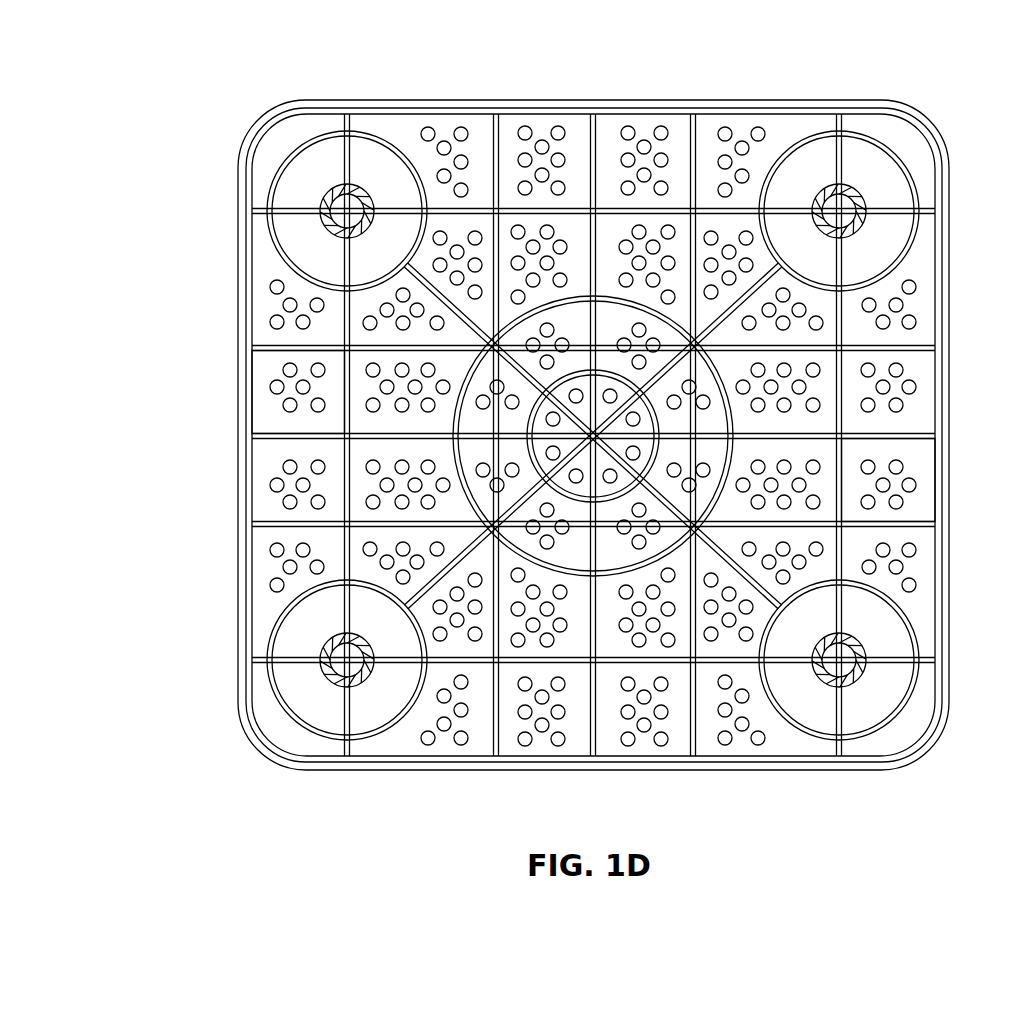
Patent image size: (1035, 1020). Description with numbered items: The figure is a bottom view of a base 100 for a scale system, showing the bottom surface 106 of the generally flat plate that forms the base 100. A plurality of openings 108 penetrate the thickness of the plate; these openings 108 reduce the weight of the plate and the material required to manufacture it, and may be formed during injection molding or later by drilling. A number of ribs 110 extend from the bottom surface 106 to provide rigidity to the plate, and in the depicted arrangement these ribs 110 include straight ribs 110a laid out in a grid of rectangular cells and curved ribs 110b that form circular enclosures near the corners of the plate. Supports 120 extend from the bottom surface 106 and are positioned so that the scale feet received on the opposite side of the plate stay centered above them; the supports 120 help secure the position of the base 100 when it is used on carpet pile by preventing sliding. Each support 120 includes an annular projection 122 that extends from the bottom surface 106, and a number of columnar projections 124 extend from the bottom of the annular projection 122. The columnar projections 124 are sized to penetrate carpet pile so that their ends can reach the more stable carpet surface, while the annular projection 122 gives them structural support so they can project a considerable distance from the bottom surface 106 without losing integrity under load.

The base 100 is at (199, 102).
The bottom surface 106 is at (783, 132).
The openings 108 is at (912, 386).
The ribs 110 is at (910, 437).
The straight ribs 110a is at (260, 347).
The curved ribs 110b is at (912, 630).
The supports 120 is at (898, 699).
The annular projection 122 is at (828, 683).
The columnar projections 124 is at (817, 659).